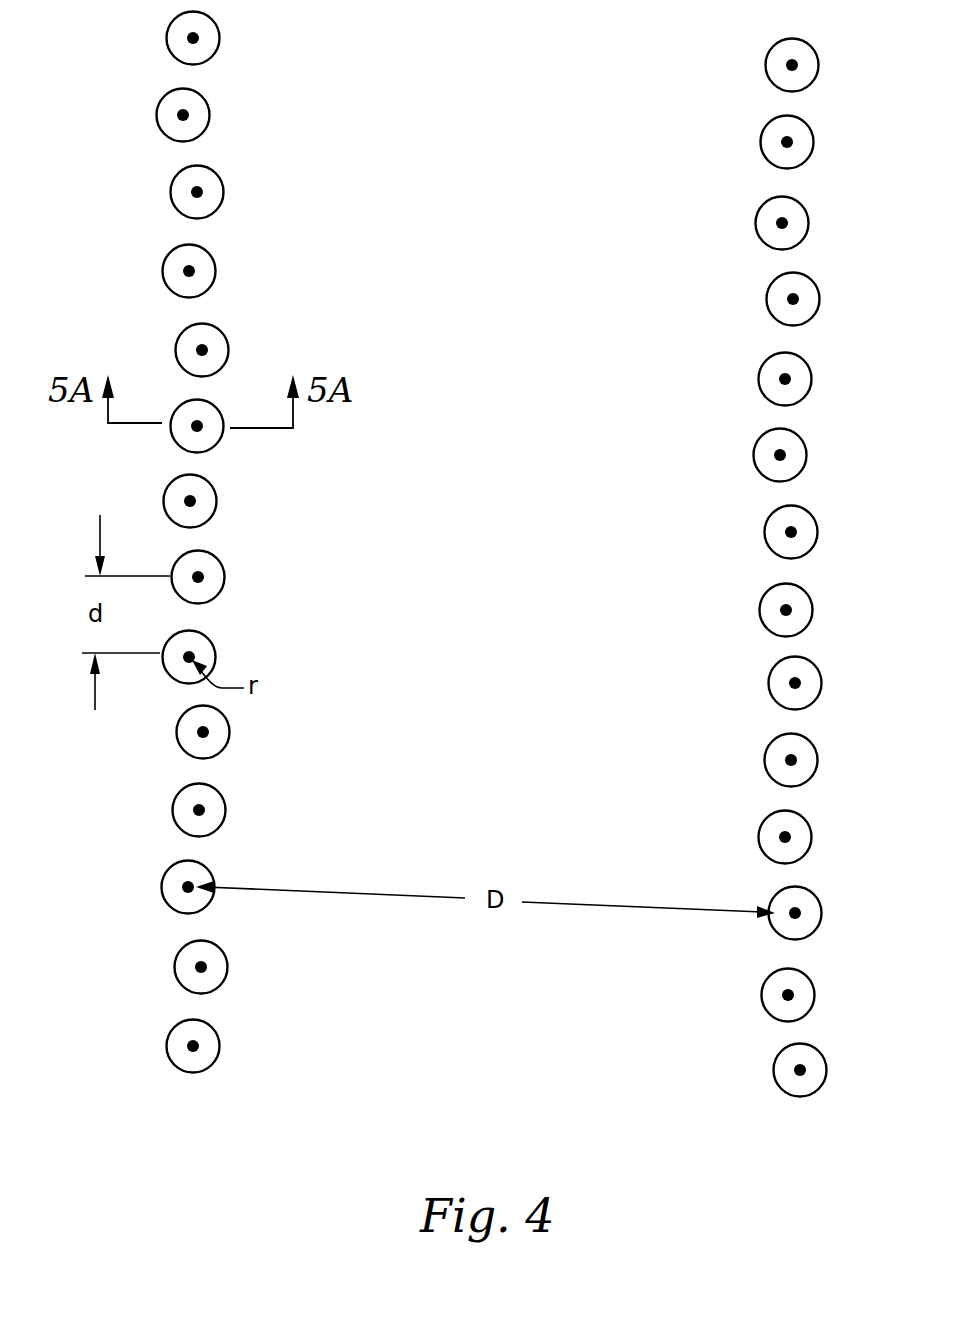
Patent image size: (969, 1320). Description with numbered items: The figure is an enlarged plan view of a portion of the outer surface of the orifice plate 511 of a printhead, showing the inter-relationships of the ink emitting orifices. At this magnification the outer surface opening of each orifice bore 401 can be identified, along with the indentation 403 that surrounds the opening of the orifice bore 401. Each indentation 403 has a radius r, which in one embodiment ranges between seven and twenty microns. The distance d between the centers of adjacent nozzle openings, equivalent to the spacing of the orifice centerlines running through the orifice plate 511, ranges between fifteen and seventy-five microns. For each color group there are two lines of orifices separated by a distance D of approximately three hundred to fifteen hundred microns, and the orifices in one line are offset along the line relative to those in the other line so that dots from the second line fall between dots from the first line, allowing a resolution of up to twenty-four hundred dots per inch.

The orifice bore 401 is at (196, 500).
The indentation 403 is at (201, 515).
The orifice plate 511 is at (502, 266).